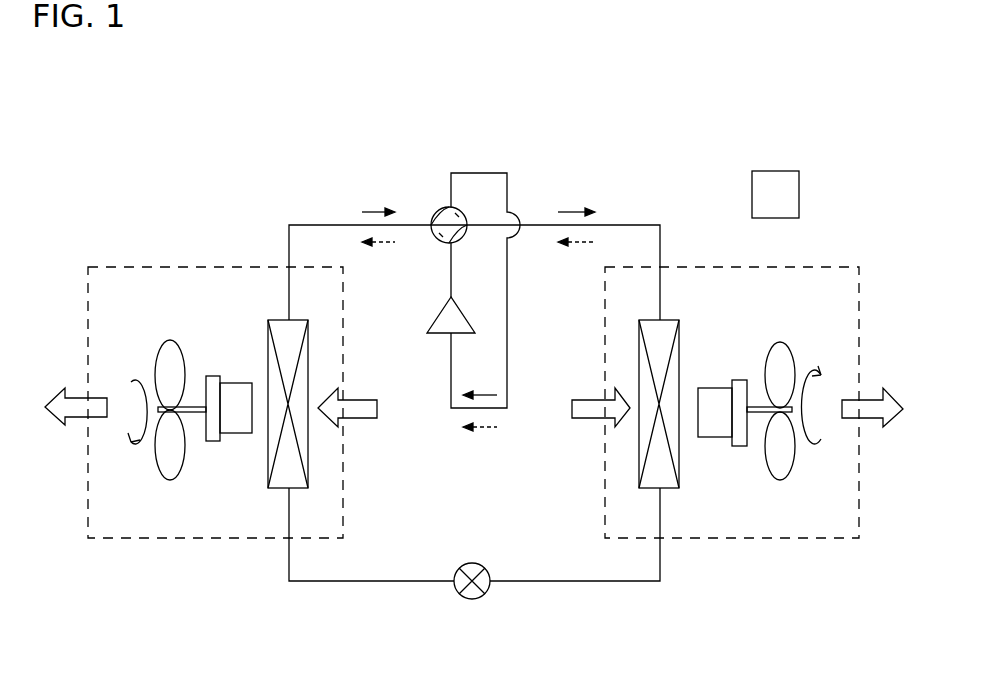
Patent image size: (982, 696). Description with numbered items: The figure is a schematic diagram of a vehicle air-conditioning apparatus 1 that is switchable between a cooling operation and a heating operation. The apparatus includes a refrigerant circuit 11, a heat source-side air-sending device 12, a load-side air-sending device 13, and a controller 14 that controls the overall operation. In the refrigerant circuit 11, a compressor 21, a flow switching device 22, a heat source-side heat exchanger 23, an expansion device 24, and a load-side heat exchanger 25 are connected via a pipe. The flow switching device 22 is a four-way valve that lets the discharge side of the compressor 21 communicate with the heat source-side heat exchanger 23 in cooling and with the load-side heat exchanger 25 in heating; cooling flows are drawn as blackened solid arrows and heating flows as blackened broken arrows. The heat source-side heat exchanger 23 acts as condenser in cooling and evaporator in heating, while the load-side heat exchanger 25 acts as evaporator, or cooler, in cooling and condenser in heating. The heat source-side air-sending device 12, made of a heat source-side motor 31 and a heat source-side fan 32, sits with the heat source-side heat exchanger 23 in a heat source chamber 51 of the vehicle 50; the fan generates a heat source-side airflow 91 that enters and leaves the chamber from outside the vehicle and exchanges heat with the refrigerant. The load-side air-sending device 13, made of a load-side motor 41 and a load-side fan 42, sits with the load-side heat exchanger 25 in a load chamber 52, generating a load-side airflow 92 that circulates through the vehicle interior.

The vehicle air-conditioning apparatus 1 is at (172, 155).
The refrigerant circuit 11 is at (315, 225).
The heat source-side air-sending device 12 is at (778, 500).
The load-side air-sending device 13 is at (168, 498).
The controller 14 is at (773, 182).
The compressor 21 is at (443, 322).
The flow switching device 22 is at (437, 215).
The heat source-side heat exchanger 23 is at (657, 357).
The expansion device 24 is at (463, 580).
The load-side heat exchanger 25 is at (292, 354).
The heat source-side motor 31 is at (738, 430).
The heat source-side fan 32 is at (777, 445).
The load-side motor 41 is at (217, 428).
The load-side fan 42 is at (168, 442).
The vehicle 50 is at (142, 187).
The heat source chamber 51 is at (810, 267).
The load chamber 52 is at (190, 267).
The heat source-side airflow 91 is at (583, 408).
The load-side airflow 92 is at (372, 408).